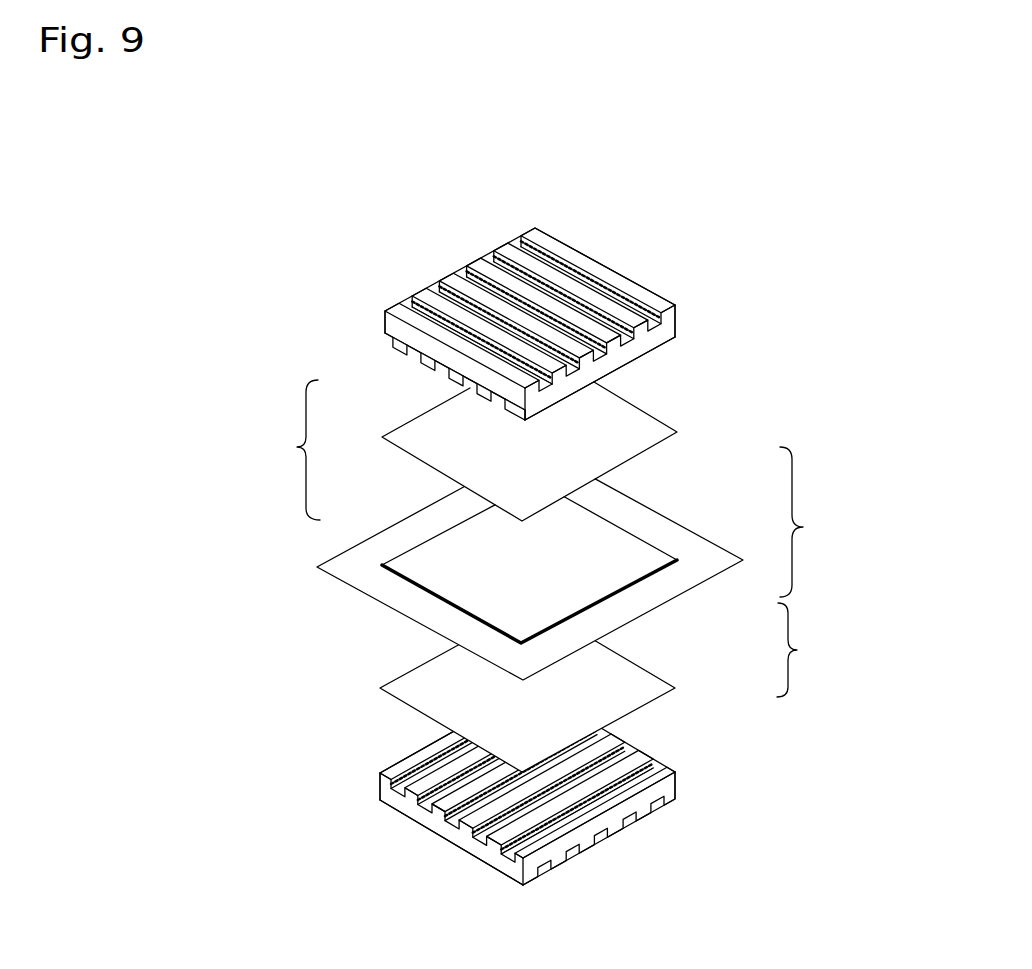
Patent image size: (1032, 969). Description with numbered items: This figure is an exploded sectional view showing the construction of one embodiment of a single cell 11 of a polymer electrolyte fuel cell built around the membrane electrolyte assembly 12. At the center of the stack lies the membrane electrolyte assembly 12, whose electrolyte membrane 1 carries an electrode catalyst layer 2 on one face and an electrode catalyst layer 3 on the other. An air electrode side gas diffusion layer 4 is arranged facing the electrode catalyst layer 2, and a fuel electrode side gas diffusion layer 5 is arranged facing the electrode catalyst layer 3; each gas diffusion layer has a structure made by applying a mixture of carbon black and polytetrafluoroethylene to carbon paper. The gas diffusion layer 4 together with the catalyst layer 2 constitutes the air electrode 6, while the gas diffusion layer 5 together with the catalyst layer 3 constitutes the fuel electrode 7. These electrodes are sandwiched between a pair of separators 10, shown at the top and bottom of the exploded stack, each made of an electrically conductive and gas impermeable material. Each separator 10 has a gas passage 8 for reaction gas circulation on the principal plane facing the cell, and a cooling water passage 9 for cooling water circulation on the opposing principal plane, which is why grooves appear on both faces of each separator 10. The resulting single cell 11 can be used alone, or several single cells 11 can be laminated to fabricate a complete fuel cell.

The electrolyte membrane 1 is at (707, 543).
The electrode catalyst layer 2 is at (433, 552).
The electrode catalyst layer 3 is at (652, 577).
The air electrode side gas diffusion layer 4 is at (420, 428).
The fuel electrode side gas diffusion layer 5 is at (658, 671).
The air electrode 6 is at (294, 450).
The fuel electrode 7 is at (802, 650).
The gas passage 8 is at (465, 828).
The cooling water passage 9 is at (602, 833).
The separator 10 is at (549, 559).
The single cell 11 is at (782, 366).
The membrane electrolyte assembly 12 is at (814, 522).